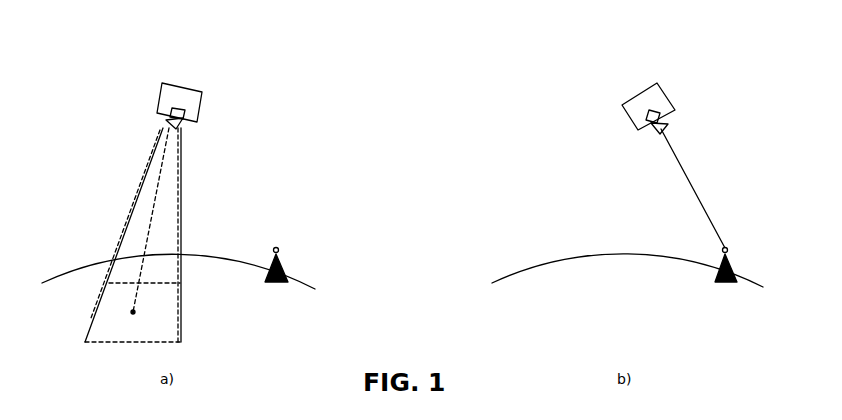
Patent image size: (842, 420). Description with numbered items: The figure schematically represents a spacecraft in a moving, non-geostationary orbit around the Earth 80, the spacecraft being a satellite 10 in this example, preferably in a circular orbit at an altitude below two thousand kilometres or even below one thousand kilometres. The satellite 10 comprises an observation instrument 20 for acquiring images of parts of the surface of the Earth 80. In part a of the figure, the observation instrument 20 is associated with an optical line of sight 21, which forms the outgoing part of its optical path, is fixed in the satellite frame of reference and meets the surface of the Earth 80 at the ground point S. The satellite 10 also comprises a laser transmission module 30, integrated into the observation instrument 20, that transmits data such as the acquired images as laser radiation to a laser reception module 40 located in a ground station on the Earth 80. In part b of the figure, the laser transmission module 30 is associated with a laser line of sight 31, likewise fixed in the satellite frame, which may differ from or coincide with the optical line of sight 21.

The satellite 10 is at (200, 107).
The observation instrument 20 is at (168, 126).
The optical line of sight 21 is at (155, 207).
The laser transmission module 30 is at (189, 121).
The laser line of sight 31 is at (695, 193).
The laser reception module 40 is at (279, 250).
The Earth 80 is at (82, 263).